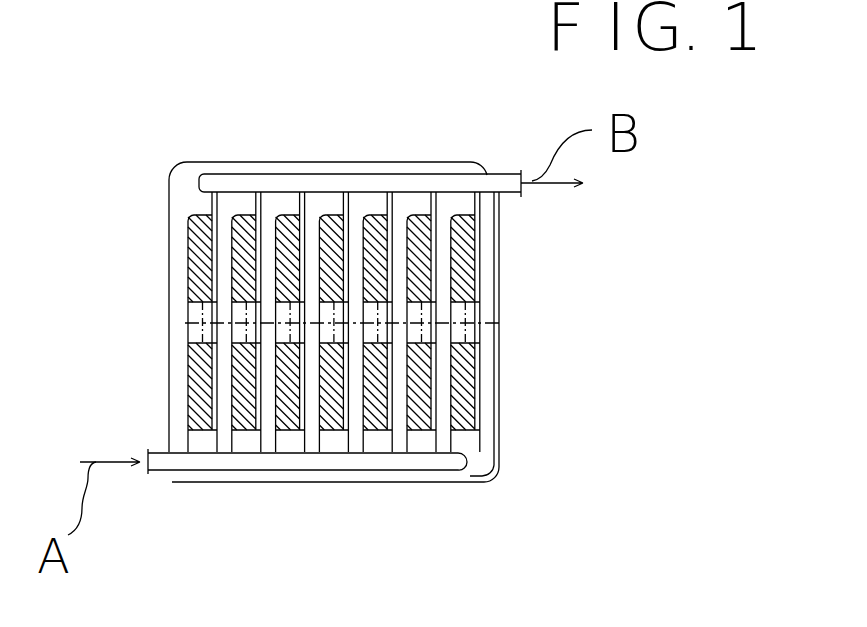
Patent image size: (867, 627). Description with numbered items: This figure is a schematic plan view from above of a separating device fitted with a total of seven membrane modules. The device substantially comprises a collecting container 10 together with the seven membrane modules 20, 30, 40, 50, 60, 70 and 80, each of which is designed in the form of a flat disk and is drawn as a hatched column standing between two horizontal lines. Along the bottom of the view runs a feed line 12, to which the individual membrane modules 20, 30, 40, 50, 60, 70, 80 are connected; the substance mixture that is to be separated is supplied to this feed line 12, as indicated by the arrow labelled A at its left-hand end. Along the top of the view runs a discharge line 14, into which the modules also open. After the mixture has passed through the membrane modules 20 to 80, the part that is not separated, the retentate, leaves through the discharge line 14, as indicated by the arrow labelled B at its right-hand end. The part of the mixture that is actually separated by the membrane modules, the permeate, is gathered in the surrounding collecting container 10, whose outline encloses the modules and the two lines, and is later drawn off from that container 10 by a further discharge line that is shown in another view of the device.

The collecting container 10 is at (583, 479).
The feed line 12 is at (280, 477).
The discharge line 14 is at (232, 180).
The membrane module 20 is at (470, 238).
The membrane module 30 is at (420, 285).
The membrane module 40 is at (390, 426).
The membrane module 50 is at (323, 220).
The membrane module 60 is at (292, 430).
The membrane module 70 is at (243, 218).
The membrane module 80 is at (212, 458).